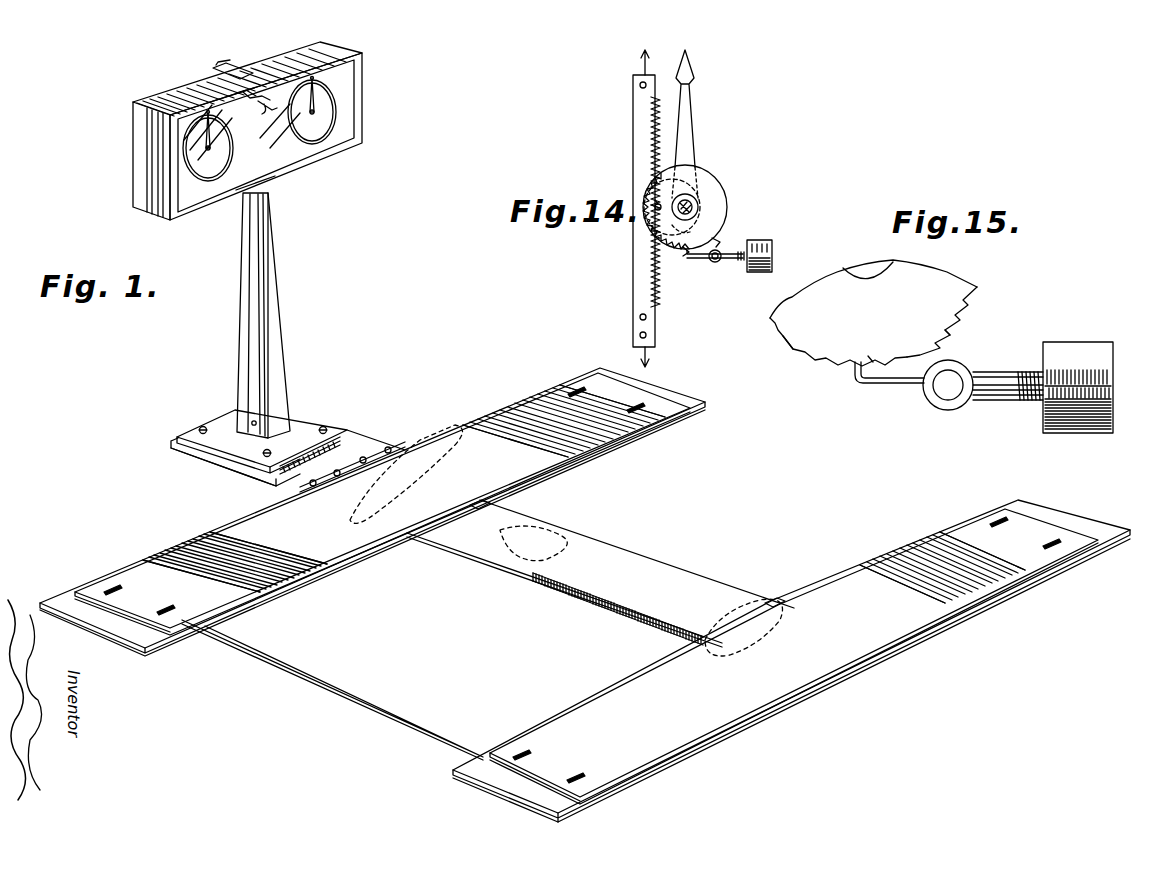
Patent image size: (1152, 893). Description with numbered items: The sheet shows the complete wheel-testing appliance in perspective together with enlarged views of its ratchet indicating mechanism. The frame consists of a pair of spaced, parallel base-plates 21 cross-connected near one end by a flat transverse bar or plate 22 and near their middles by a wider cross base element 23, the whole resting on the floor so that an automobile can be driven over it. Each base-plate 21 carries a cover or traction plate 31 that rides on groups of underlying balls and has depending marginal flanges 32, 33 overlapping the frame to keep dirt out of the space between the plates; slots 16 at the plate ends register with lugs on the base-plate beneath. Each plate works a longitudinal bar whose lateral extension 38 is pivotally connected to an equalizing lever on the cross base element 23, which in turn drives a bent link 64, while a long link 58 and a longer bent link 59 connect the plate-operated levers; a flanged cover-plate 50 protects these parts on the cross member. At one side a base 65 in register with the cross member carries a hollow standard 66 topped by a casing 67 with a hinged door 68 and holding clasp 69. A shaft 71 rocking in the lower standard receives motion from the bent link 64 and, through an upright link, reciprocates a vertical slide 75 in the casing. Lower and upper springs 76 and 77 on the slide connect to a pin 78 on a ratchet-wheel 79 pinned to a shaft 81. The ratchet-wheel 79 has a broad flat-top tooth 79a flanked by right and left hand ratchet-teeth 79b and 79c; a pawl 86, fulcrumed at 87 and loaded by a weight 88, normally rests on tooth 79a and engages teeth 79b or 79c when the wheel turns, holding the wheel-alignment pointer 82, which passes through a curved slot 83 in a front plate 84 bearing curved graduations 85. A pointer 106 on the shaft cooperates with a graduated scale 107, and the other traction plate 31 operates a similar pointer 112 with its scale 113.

In FIG. 1, the slots 16 is at (160, 608).
In FIG. 1, the base-plate 21 is at (112, 636).
In FIG. 1, the transverse bar 22 is at (380, 715).
In FIG. 1, the cross base element 23 is at (585, 604).
In FIG. 1, the traction plate 31 is at (429, 525).
In FIG. 1, the marginal flange 32 is at (862, 658).
In FIG. 1, the marginal flange 33 is at (600, 440).
In FIG. 1, the lateral extension 38 is at (476, 508).
In FIG. 1, the cover-plate 50 is at (540, 568).
In FIG. 1, the long link 58 is at (310, 461).
In FIG. 1, the bent link 59 is at (336, 454).
In FIG. 1, the bent link 64 is at (296, 468).
In FIG. 1, the base 65 is at (250, 455).
In FIG. 1, the standard 66 is at (246, 304).
In FIG. 1, the casing 67 is at (148, 160).
In FIG. 1, the door 68 is at (133, 132).
In FIG. 1, the holding clasp 69 is at (223, 65).
In FIG. 1, the shaft 71 is at (252, 420).
In FIG. 14, the slide 75 is at (633, 118).
In FIG. 14, the lower spring 76 is at (648, 286).
In FIG. 14, the upper spring 77 is at (650, 140).
In FIG. 14, the pin 78 is at (655, 205).
In FIG. 14, the ratchet-wheel 79 is at (706, 180).
In FIG. 15, the ratchet-wheel 79 is at (935, 280).
In FIG. 14, the broad flat-top tooth 79a is at (693, 231).
In FIG. 15, the broad flat-top tooth 79a is at (866, 352).
In FIG. 14, the right hand ratchet-teeth 79b is at (718, 240).
In FIG. 15, the right hand ratchet-teeth 79b is at (957, 332).
In FIG. 14, the left hand ratchet-teeth 79c is at (684, 254).
In FIG. 15, the left hand ratchet-teeth 79c is at (790, 348).
In FIG. 14, the shaft 81 is at (698, 205).
In FIG. 1, the wheel-alignment pointer 82 is at (265, 88).
In FIG. 14, the wheel-alignment pointer 82 is at (693, 71).
In FIG. 1, the curved slot 83 is at (268, 118).
In FIG. 1, the plate 84 is at (272, 180).
In FIG. 1, the curved graduations 85 is at (242, 90).
In FIG. 14, the pawl 86 is at (700, 260).
In FIG. 15, the pawl 86 is at (885, 385).
In FIG. 14, the fulcrum 87 is at (715, 263).
In FIG. 15, the fulcrum 87 is at (948, 402).
In FIG. 14, the weight 88 is at (760, 273).
In FIG. 15, the weight 88 is at (1043, 424).
In FIG. 1, the pointer 106 is at (190, 108).
In FIG. 1, the graduated scale 107 is at (200, 200).
In FIG. 1, the pointer 112 is at (355, 72).
In FIG. 1, the scale 113 is at (352, 100).